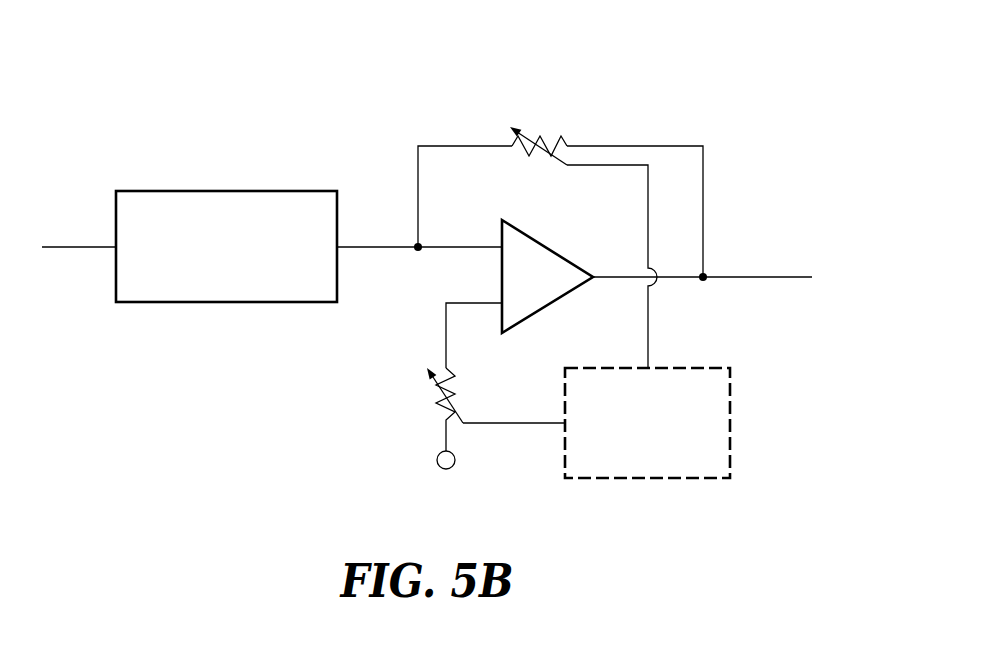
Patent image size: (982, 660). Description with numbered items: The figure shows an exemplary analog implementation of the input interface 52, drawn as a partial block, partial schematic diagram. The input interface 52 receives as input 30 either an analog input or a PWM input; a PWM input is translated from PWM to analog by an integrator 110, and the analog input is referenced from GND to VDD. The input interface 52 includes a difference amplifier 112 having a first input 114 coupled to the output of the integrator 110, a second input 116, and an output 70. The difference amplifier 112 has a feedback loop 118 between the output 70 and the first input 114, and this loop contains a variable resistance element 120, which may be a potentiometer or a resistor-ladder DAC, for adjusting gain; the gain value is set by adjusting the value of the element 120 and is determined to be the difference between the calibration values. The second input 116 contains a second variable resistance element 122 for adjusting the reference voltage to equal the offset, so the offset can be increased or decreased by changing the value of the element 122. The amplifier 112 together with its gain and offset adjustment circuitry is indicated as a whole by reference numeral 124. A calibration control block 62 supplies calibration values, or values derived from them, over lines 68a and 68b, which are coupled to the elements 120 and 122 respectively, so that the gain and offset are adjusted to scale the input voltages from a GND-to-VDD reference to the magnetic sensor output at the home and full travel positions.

The input interface 52 is at (197, 89).
The amplifier with gain and offset adjustment circuitry 124 is at (726, 54).
The input 30 is at (70, 247).
The integrator 110 is at (209, 290).
The first input 114 is at (382, 247).
The feedback loop 118 is at (705, 173).
The variable resistance element 120 is at (571, 125).
The calibration values line 68a is at (647, 222).
The difference amplifier 112 is at (514, 289).
The output 70 is at (765, 277).
The second input 116 is at (446, 330).
The variable resistance element 122 is at (425, 408).
The calibration values line 68b is at (520, 423).
The calibration control block 62 is at (635, 465).